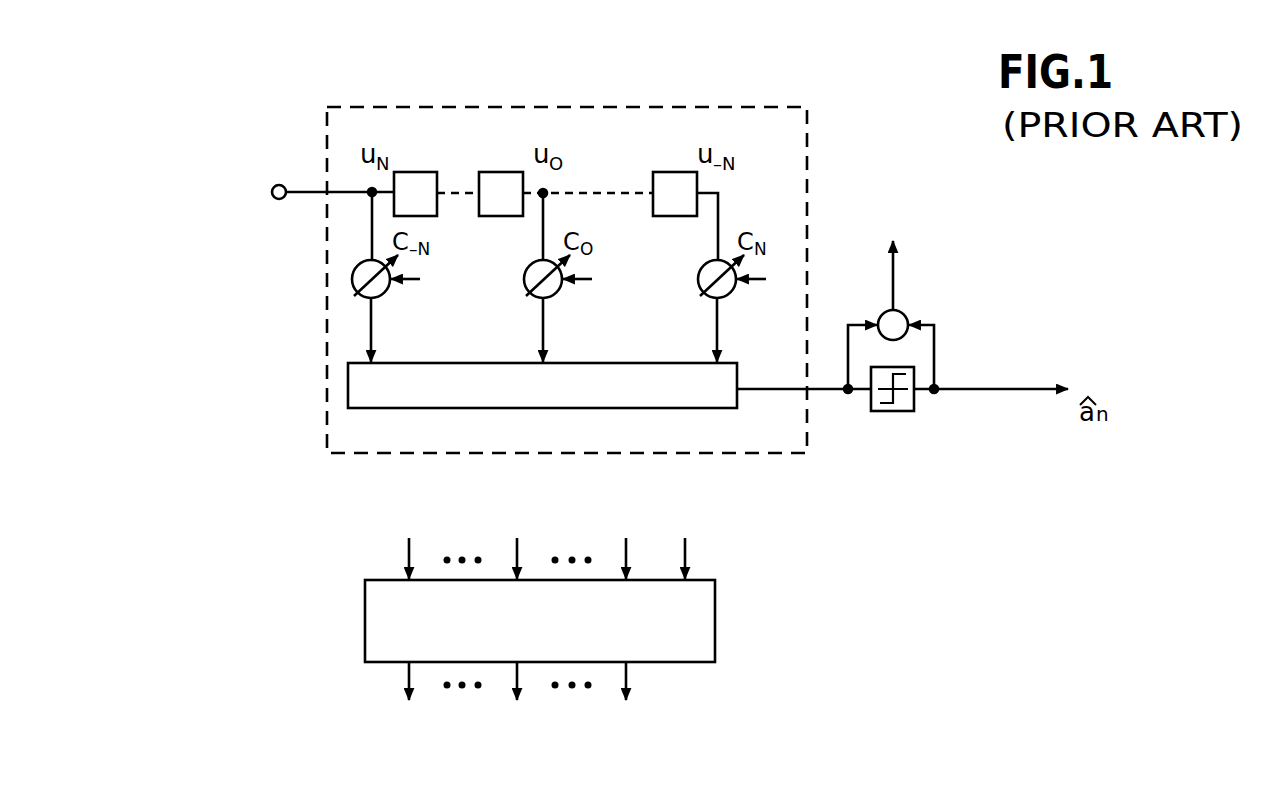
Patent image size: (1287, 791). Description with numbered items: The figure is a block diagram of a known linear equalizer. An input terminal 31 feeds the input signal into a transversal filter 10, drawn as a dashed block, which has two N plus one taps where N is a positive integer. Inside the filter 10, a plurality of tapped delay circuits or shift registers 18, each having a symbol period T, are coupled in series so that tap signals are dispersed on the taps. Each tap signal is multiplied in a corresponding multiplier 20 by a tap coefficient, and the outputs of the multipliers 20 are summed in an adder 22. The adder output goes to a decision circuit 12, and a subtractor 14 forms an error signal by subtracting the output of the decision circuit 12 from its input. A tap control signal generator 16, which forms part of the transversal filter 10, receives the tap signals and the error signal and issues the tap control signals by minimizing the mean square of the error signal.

The transversal filter 10 is at (325, 382).
The decision circuit 12 is at (893, 411).
The subtractor 14 is at (902, 313).
The tap control signal generator 16 is at (715, 620).
The tapped delay circuits 18 is at (422, 172).
The multipliers 20 is at (387, 297).
The adder 22 is at (595, 409).
The input terminal 31 is at (275, 200).